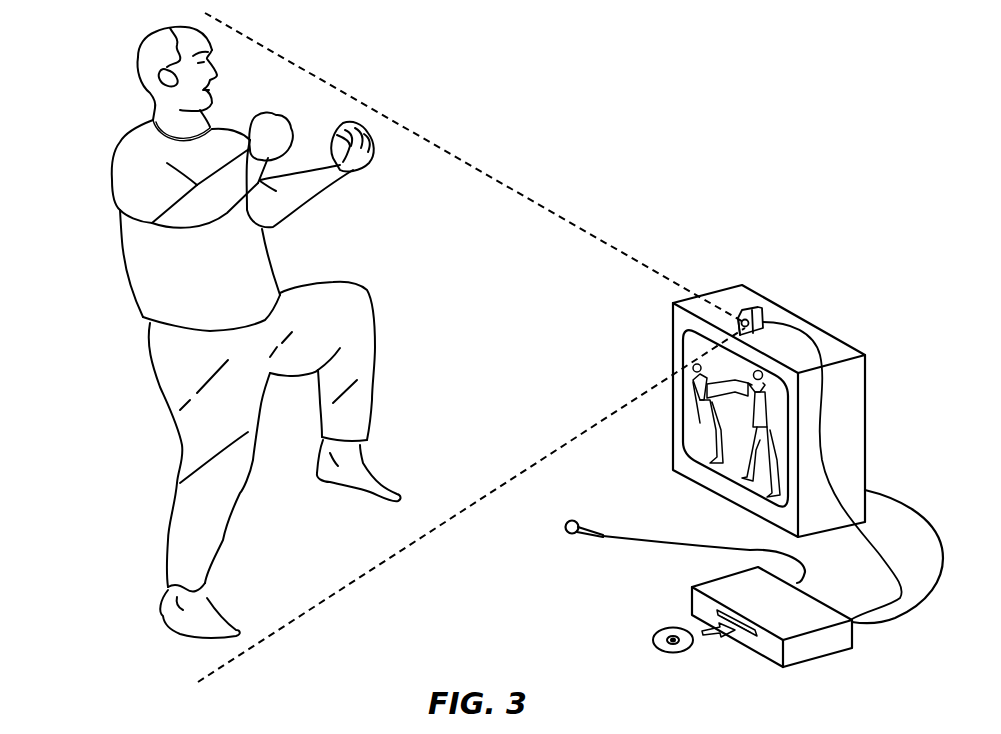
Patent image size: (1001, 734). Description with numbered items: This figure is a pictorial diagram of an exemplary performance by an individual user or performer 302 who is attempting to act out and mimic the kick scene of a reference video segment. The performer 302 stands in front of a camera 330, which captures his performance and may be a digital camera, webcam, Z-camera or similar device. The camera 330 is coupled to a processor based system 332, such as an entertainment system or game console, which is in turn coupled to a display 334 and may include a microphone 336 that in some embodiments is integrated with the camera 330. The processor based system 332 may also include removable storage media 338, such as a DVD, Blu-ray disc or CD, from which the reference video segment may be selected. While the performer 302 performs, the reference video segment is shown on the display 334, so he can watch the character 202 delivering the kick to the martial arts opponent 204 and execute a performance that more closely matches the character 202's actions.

The performer 302 is at (113, 104).
The camera 330 is at (749, 311).
The display 334 is at (830, 348).
The character 202 is at (703, 433).
The martial arts opponent 204 is at (733, 482).
The processor based system 332 is at (692, 598).
The microphone 336 is at (570, 534).
The removable storage media 338 is at (662, 632).